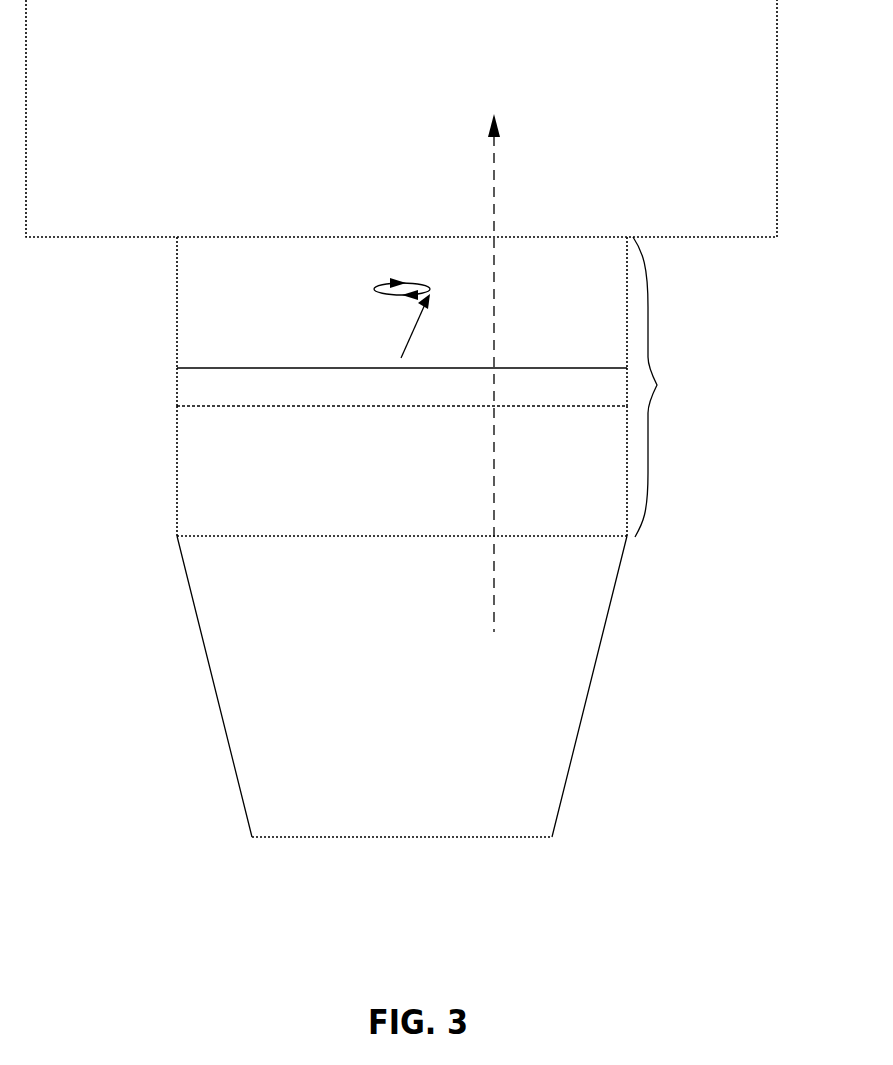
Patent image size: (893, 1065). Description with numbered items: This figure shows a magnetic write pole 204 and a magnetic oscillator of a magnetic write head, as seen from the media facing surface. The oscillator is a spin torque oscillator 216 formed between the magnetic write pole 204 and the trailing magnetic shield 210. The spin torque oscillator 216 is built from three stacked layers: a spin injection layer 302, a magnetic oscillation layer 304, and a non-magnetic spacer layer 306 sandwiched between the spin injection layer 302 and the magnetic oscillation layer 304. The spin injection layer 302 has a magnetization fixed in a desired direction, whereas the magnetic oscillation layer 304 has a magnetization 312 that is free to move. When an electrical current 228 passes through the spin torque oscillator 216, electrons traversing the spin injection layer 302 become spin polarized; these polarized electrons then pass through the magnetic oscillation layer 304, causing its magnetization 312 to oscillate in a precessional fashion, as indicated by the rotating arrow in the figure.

The trailing magnetic shield 210 is at (439, 86).
The electrical current 228 is at (494, 279).
The spin torque oscillator 216 is at (648, 290).
The magnetic oscillation layer 304 is at (195, 318).
The non-magnetic spacer layer 306 is at (194, 386).
The spin injection layer 302 is at (194, 458).
The magnetic write pole 204 is at (454, 686).
The magnetization 312 is at (412, 330).